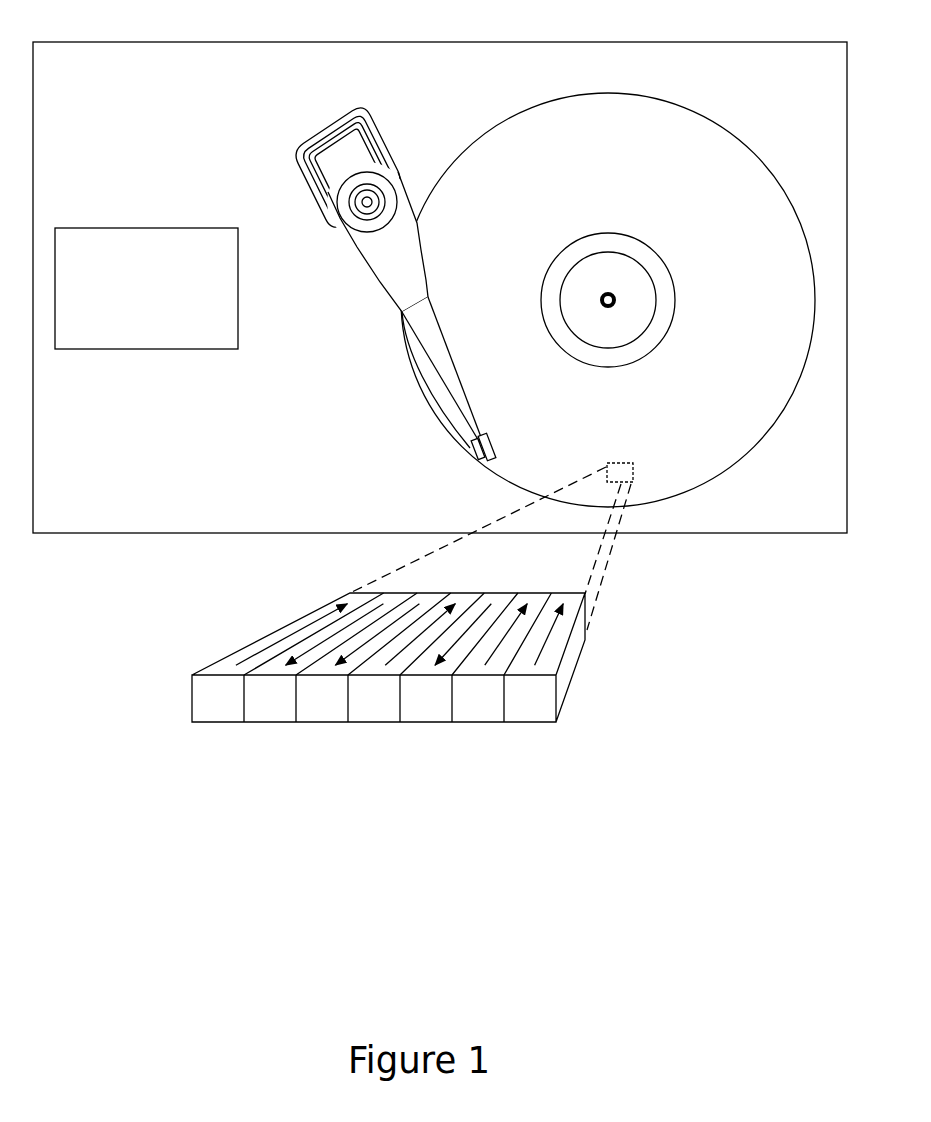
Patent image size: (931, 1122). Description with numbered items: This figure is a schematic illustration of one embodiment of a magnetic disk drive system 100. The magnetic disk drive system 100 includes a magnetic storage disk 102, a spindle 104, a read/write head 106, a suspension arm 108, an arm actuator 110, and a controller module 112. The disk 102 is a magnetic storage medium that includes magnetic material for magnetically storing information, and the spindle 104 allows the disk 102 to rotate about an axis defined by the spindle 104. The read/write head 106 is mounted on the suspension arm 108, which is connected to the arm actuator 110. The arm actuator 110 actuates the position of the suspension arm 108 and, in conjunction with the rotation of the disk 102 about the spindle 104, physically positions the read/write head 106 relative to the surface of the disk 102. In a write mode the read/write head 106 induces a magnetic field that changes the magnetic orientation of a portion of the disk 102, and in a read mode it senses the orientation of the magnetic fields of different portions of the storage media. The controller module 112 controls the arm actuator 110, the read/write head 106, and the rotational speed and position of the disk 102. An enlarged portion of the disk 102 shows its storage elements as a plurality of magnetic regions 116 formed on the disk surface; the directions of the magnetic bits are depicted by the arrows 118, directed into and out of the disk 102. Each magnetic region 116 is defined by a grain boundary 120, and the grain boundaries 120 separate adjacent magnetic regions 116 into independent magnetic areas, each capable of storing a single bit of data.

The magnetic disk drive system 100 is at (187, 99).
The magnetic storage disk 102 is at (753, 148).
The spindle 104 is at (602, 299).
The read/write head 106 is at (469, 453).
The suspension arm 108 is at (423, 336).
The arm actuator 110 is at (302, 166).
The controller module 112 is at (163, 308).
The magnetic regions 116 is at (233, 708).
The arrows 118 is at (257, 653).
The grain boundary 120 is at (244, 722).